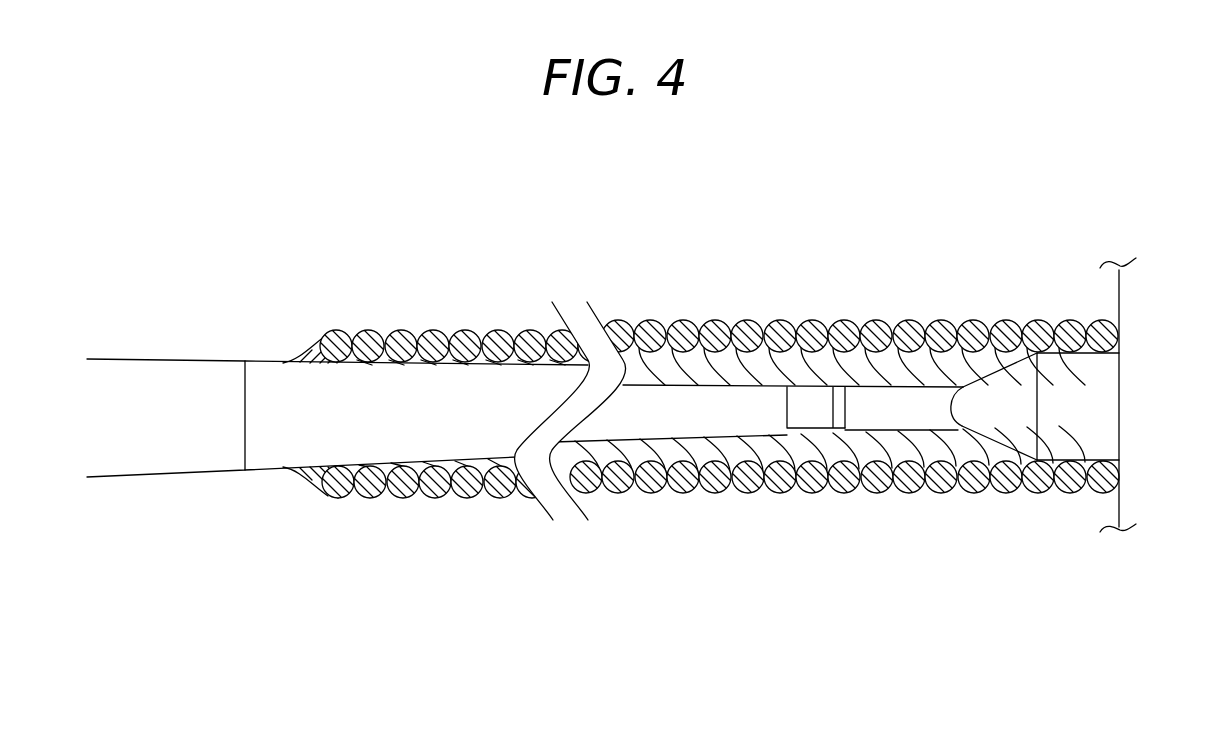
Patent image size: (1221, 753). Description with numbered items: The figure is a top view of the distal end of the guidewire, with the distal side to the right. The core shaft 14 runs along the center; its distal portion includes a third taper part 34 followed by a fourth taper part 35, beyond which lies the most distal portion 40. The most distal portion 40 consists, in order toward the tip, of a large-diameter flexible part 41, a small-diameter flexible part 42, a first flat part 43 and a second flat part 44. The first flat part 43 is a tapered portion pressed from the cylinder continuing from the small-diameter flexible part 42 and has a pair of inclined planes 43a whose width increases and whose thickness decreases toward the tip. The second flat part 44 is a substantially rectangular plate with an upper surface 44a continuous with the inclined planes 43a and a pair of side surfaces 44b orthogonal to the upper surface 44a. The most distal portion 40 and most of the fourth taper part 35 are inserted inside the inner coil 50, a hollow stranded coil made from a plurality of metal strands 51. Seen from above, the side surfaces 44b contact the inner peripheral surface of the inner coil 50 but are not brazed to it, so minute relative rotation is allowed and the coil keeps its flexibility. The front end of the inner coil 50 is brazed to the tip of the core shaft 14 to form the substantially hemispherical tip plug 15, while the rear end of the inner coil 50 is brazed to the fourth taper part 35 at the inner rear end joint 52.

The core shaft 14 is at (337, 489).
The third taper part 34 is at (170, 432).
The fourth taper part 35 is at (297, 428).
The inner rear end joint 52 is at (318, 342).
The inner coil 50 is at (742, 335).
The metal strands 51 is at (712, 328).
The most distal portion 40 is at (870, 404).
The large-diameter flexible part 41 is at (797, 403).
The small-diameter flexible part 42 is at (894, 405).
The first flat part 43 is at (973, 402).
The inclined planes 43a is at (1017, 424).
The second flat part 44 is at (1075, 329).
The upper surface 44a is at (1100, 407).
The side surfaces 44b is at (1122, 472).
The tip plug 15 is at (1145, 497).